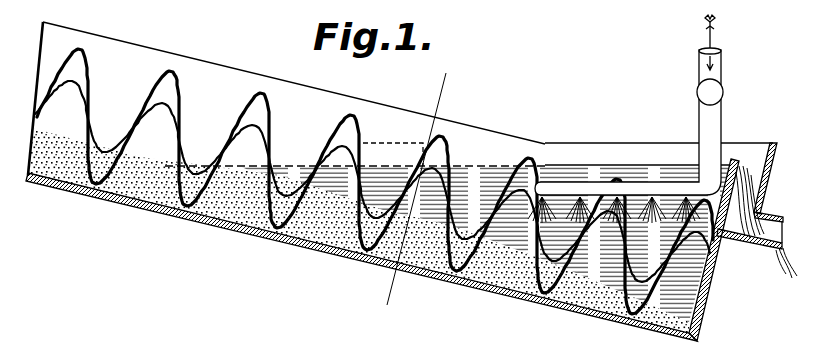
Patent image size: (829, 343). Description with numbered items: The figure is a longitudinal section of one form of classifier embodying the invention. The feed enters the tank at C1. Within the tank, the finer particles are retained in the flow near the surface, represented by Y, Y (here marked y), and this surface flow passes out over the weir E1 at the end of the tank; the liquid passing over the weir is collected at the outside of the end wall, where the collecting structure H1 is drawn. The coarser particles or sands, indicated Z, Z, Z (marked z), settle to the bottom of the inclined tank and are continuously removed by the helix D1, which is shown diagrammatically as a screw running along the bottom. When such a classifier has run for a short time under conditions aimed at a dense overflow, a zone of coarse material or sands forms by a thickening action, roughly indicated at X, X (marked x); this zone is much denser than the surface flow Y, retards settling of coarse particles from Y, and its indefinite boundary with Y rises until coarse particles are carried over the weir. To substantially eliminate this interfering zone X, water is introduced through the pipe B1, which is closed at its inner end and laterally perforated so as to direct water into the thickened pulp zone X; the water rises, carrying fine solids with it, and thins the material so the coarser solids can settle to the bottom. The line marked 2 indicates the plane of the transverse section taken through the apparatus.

The helix D1 is at (254, 112).
The feed entry C1 is at (393, 143).
The pipe B1 is at (593, 171).
The weir E1 is at (738, 163).
The outer collecting vessel H1 is at (767, 230).
The section line 2- 2 is at (473, 90).
The zone of coarse material or sands x is at (447, 243).
The flow near the surface y is at (608, 173).
The coarser particles or sands z is at (358, 230).